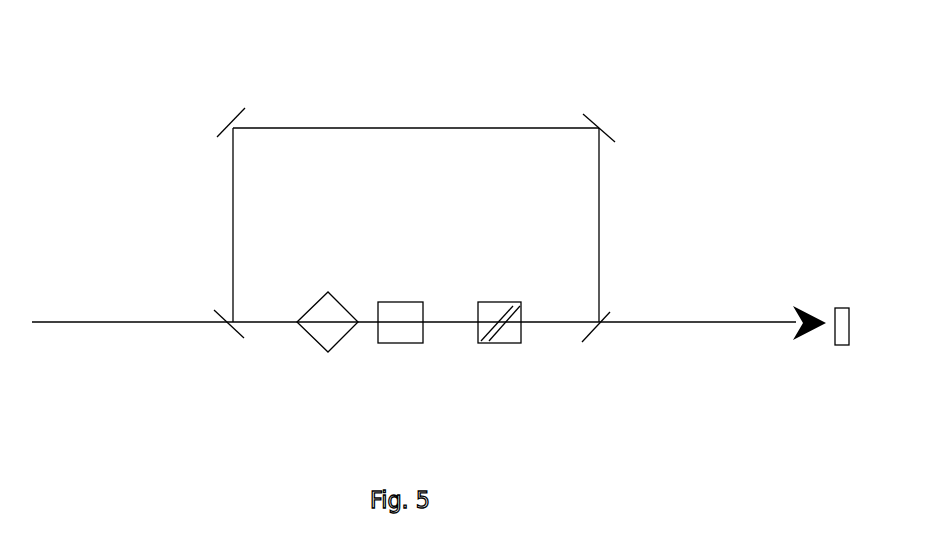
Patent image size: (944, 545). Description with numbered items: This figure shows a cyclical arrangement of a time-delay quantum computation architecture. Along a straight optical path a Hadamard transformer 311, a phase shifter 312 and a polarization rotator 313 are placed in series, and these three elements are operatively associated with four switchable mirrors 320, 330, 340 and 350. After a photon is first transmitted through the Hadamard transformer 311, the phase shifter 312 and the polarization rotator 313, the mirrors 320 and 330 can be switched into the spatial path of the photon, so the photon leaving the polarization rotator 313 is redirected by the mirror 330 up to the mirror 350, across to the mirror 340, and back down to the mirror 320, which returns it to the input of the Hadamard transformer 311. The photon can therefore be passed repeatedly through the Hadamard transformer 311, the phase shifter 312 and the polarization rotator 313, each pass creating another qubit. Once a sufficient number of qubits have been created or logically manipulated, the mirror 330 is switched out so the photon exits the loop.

The Hadamard transformer 311 is at (328, 360).
The phase shifter 312 is at (402, 362).
The polarization rotator 313 is at (499, 360).
The switchable mirror 320 is at (233, 355).
The switchable mirror 330 is at (595, 360).
The switchable mirror 340 is at (227, 112).
The switchable mirror 350 is at (593, 112).